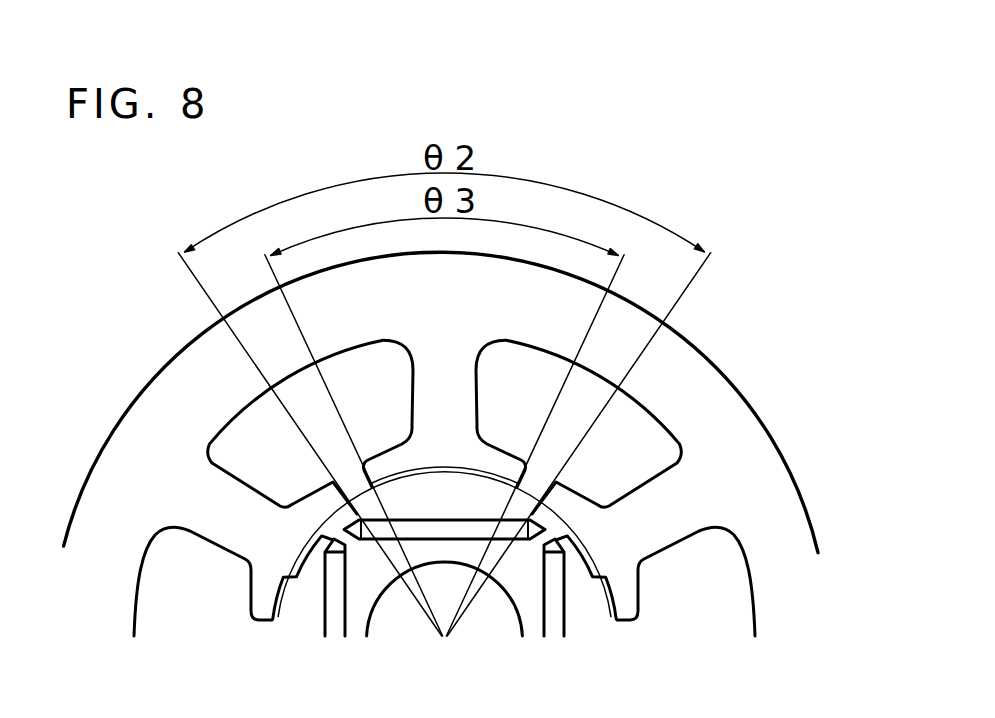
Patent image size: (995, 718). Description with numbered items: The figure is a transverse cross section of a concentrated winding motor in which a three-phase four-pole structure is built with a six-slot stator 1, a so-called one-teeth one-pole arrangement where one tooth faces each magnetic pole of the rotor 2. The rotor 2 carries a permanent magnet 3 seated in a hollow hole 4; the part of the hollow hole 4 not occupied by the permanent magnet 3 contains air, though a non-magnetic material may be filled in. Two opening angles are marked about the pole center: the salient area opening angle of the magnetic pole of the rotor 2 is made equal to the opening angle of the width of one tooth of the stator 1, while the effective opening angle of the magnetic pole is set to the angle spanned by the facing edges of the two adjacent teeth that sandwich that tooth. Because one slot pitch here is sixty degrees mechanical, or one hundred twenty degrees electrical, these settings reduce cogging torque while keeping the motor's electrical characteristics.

The stator 1 is at (698, 422).
The rotor 2 is at (582, 603).
The permanent magnet 3 is at (553, 580).
The hollow hole 4 is at (330, 541).